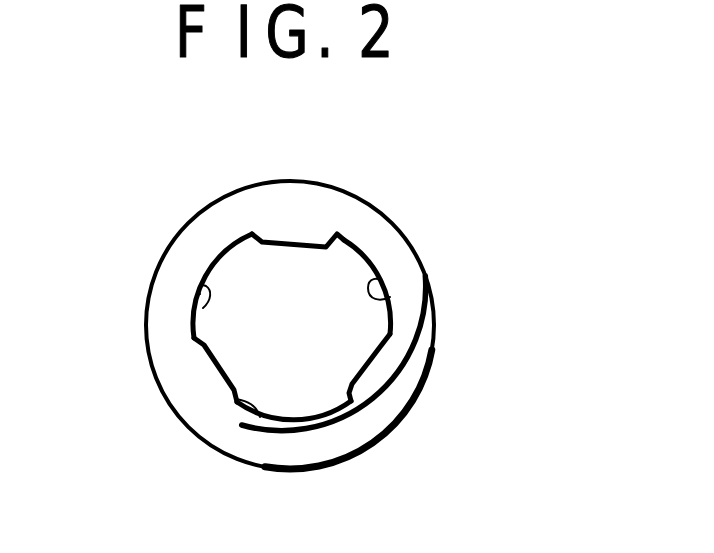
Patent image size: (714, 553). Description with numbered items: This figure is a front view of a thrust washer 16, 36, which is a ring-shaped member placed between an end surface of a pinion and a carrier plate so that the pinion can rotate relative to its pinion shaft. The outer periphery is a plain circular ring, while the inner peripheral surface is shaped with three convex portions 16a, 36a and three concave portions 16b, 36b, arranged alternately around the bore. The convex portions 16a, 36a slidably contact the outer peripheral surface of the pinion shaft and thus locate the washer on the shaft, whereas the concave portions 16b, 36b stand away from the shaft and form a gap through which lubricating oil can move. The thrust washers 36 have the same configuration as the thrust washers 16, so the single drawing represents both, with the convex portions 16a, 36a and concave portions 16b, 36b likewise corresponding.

The thrust washer 16 is at (323, 297).
The thrust washer 36 is at (370, 190).
The convex portion 16a is at (412, 336).
The convex portion 36a is at (300, 223).
The concave portion 16b is at (338, 367).
The concave portion 36b is at (203, 308).